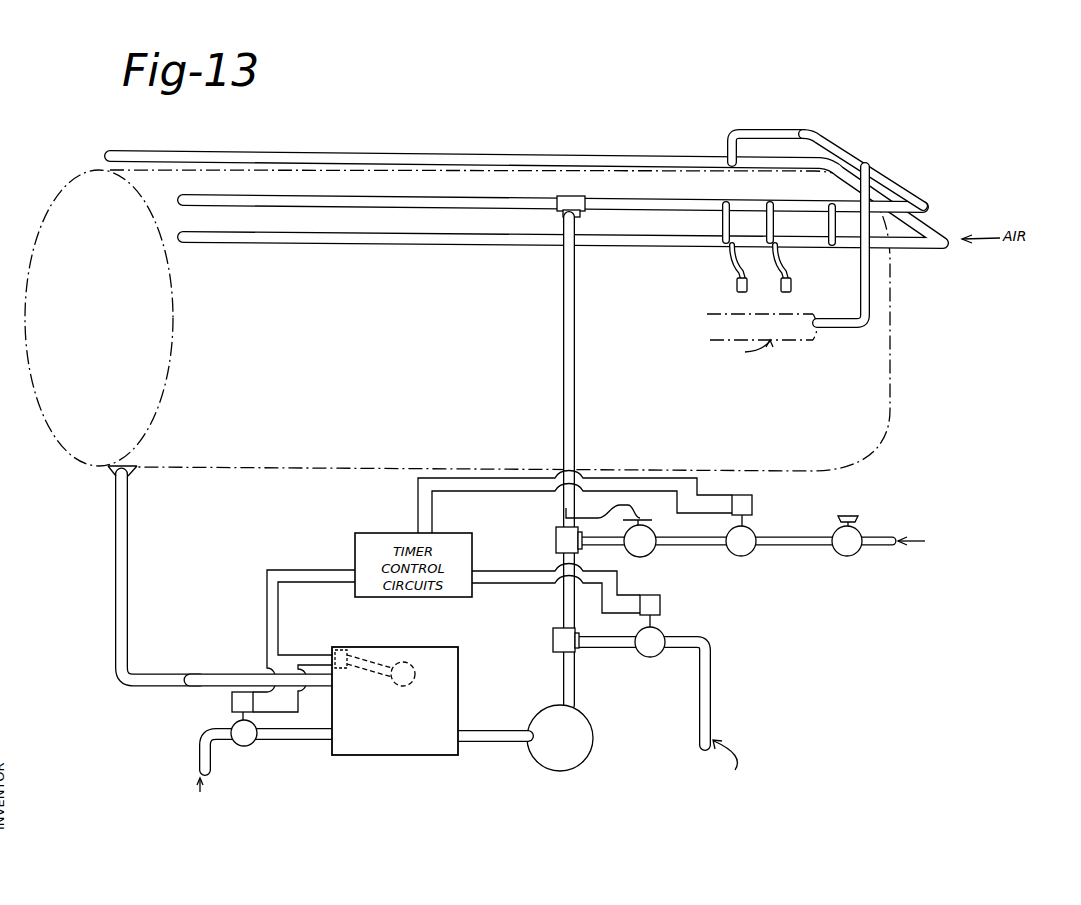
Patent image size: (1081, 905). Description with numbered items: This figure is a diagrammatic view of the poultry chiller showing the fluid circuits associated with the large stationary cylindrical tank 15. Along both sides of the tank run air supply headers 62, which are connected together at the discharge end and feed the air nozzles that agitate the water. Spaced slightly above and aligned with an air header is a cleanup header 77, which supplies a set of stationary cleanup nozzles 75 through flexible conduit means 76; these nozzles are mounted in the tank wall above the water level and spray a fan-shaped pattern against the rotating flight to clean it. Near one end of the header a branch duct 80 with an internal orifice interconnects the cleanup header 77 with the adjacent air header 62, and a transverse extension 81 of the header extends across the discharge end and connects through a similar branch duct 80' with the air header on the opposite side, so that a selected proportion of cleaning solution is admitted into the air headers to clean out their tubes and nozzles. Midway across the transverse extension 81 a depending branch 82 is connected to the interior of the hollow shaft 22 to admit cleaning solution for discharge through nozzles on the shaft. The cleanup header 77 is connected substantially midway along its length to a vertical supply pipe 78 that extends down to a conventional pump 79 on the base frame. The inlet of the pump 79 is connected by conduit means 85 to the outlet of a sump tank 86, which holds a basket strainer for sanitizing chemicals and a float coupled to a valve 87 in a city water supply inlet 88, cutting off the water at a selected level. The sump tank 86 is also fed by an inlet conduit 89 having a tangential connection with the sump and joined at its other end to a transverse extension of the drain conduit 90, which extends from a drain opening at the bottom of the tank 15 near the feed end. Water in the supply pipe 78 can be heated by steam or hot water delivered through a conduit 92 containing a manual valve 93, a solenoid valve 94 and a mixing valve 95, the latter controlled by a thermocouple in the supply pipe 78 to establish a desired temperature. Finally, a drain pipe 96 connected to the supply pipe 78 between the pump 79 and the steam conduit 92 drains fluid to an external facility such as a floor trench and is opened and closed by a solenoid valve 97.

The cylindrical tank 15 is at (52, 203).
The shaft 22 is at (788, 340).
The air supply headers 62 is at (482, 153).
The cleanup nozzles 75 is at (788, 283).
The conduit means 76 is at (720, 226).
The cleanup header 77 is at (679, 199).
The vertical supply pipe 78 is at (562, 397).
The pump 79 is at (594, 748).
The branch duct 80 is at (813, 210).
The branch duct 80' is at (743, 144).
The transverse extension 81 is at (843, 152).
The depending branch 82 is at (873, 283).
The conduit means 85 is at (500, 743).
The sump tank 86 is at (372, 756).
The valve 87 is at (248, 746).
The city water supply inlet 88 is at (209, 768).
The inlet conduit 89 is at (197, 662).
The drain conduit 90 is at (114, 546).
The conduit 92 is at (878, 546).
The manual valve 93 is at (840, 556).
The solenoid valve 94 is at (745, 556).
The mixing valve 95 is at (643, 557).
The drain pipe 96 is at (714, 704).
The solenoid valve 97 is at (645, 658).